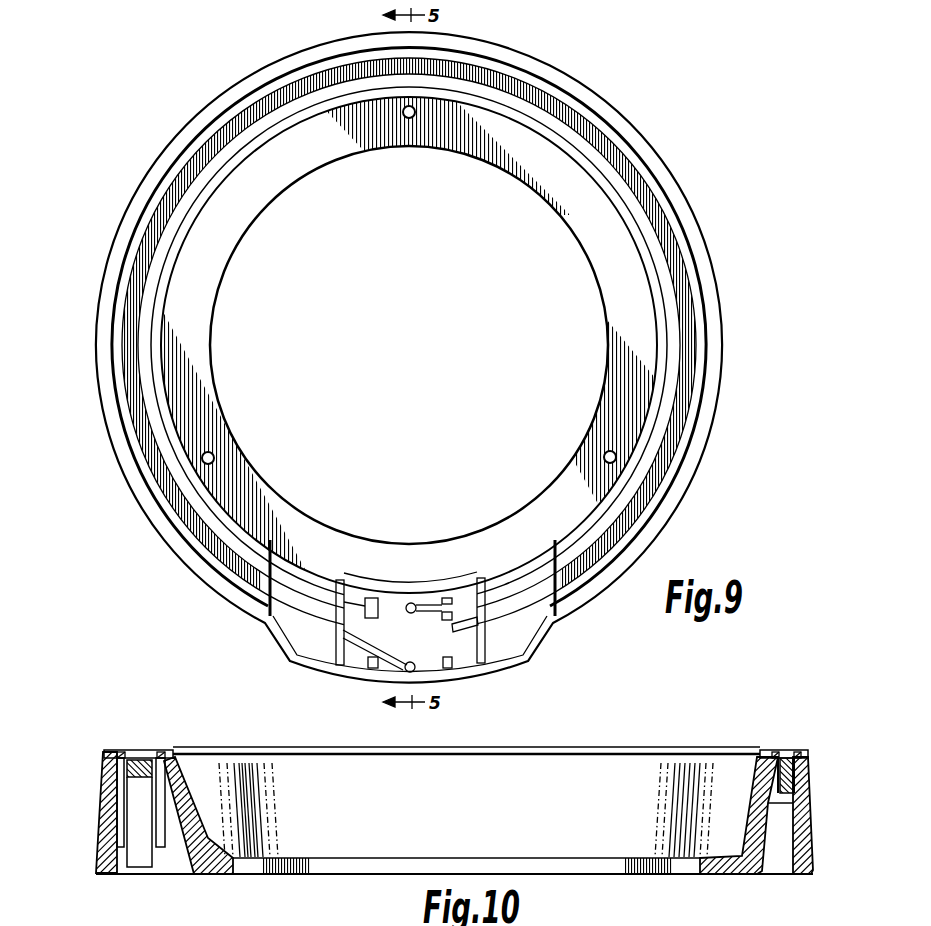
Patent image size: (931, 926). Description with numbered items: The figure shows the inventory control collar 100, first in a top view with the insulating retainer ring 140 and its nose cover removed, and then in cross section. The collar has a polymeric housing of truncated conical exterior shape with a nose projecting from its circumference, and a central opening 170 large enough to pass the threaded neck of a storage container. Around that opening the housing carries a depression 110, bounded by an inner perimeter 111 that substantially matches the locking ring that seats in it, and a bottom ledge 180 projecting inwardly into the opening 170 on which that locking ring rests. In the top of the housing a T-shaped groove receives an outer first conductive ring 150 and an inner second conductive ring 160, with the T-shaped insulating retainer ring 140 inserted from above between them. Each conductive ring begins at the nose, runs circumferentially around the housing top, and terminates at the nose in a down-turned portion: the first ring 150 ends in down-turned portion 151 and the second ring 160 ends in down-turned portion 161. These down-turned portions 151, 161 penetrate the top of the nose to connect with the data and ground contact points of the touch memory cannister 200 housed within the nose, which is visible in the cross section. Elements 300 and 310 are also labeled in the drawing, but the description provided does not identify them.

In FIG. 9, the inventory control collar 100 is at (670, 150).
In FIG. 10, the depression 110 is at (223, 818).
In FIG. 9, the inner perimeter 111 is at (640, 253).
In FIG. 10, the insulating retainer ring 140 is at (147, 752).
In FIG. 9, the first conductive ring 150 is at (673, 313).
In FIG. 10, the first conductive ring 150 is at (160, 757).
In FIG. 10, the down-turned portion 151 is at (120, 850).
In FIG. 9, the second conductive ring 160 is at (703, 313).
In FIG. 10, the second conductive ring 160 is at (123, 756).
In FIG. 10, the down-turned portion 161 is at (162, 850).
In FIG. 9, the central opening 170 is at (556, 382).
In FIG. 9, the bottom ledge 180 is at (616, 238).
In FIG. 10, the bottom ledge 180 is at (223, 875).
In FIG. 10, the touch memory cannister 200 is at (132, 805).
In FIG. 10, the base 300 is at (355, 925).
In FIG. 10, the base rim 310 is at (292, 925).